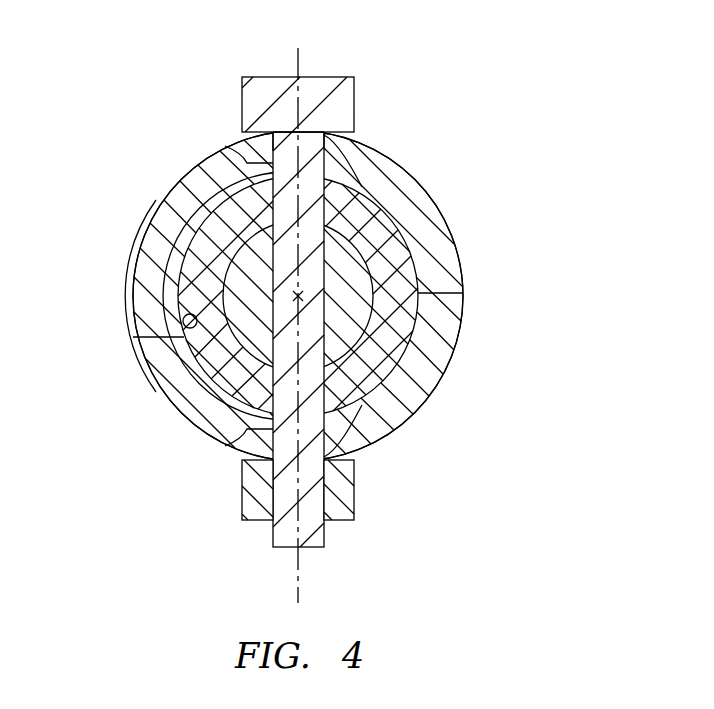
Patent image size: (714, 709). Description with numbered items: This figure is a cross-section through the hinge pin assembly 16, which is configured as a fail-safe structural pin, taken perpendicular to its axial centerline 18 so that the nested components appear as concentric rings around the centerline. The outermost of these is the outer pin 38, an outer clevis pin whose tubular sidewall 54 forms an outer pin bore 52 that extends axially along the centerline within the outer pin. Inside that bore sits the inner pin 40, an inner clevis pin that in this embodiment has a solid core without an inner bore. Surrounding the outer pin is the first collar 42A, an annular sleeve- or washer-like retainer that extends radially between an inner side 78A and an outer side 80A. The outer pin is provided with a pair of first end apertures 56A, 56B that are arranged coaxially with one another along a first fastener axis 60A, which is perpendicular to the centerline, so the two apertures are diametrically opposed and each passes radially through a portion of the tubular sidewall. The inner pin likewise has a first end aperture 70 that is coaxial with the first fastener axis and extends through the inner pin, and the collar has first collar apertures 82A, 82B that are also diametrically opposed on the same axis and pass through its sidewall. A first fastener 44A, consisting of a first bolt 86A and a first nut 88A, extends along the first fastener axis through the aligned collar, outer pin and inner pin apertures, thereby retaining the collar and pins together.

The hinge pin assembly 16 is at (507, 115).
The axial centerline 18 is at (183, 407).
The outer pin 38 is at (450, 290).
The inner pin 40 is at (450, 357).
The first collar 42A is at (453, 233).
The first fastener 44A is at (240, 532).
The outer pin bore 52 is at (420, 402).
The tubular sidewall 54 is at (410, 203).
The first end aperture 56A is at (364, 180).
The first end aperture 56B is at (357, 427).
The first fastener axis 60A is at (298, 580).
The first end aperture 70 is at (182, 233).
The inner side 78A is at (183, 336).
The outer side 80A is at (133, 297).
The first collar aperture 82A is at (223, 145).
The first collar aperture 82B is at (250, 443).
The first bolt 86A is at (362, 70).
The first nut 88A is at (355, 502).